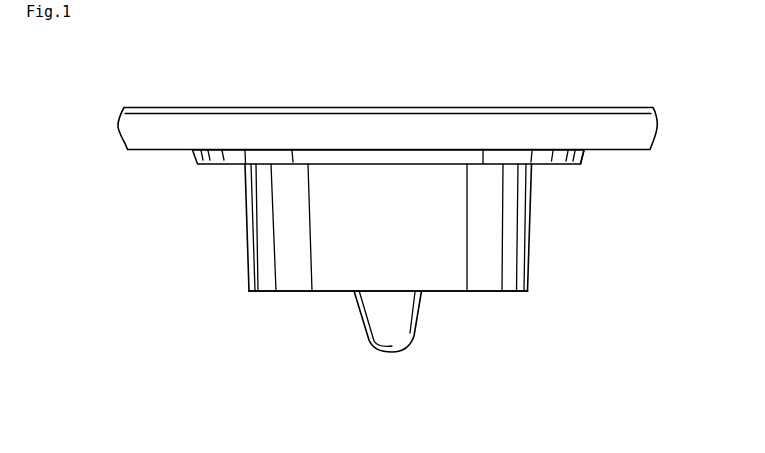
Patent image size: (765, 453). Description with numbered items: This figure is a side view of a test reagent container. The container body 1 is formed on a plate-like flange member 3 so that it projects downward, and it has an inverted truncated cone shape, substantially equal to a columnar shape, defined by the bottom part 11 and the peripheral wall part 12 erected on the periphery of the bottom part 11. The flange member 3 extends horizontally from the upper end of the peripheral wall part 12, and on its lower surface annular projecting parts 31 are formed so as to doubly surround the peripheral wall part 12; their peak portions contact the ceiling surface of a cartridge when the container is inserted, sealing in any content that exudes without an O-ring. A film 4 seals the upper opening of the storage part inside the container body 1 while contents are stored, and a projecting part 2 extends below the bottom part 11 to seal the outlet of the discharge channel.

The container body 1 is at (293, 290).
The projecting part 2 is at (414, 337).
The flange member 3 is at (158, 150).
The annular projecting parts 31 is at (577, 166).
The film 4 is at (445, 108).
The bottom part 11 is at (508, 291).
The peripheral wall part 12 is at (532, 222).